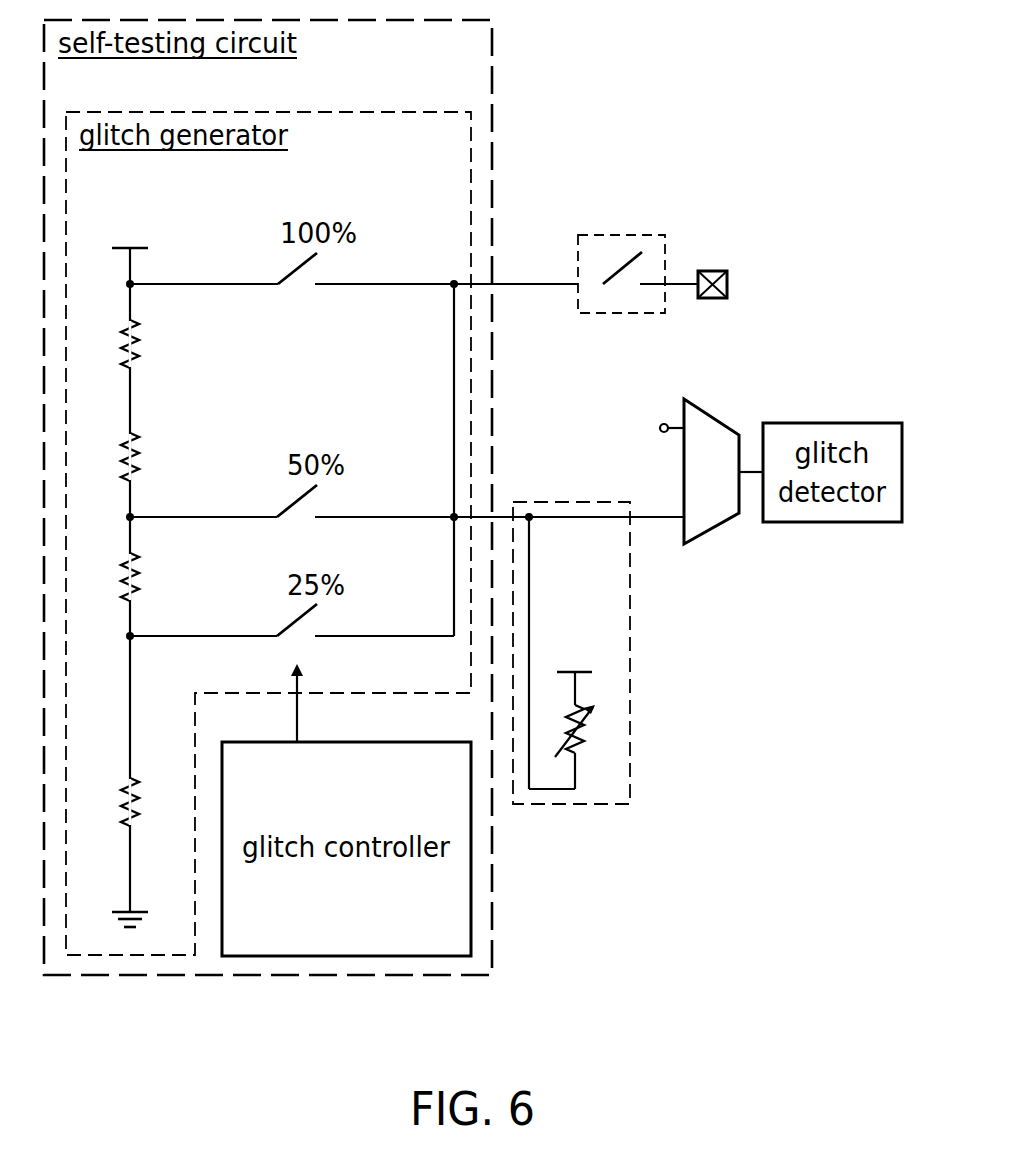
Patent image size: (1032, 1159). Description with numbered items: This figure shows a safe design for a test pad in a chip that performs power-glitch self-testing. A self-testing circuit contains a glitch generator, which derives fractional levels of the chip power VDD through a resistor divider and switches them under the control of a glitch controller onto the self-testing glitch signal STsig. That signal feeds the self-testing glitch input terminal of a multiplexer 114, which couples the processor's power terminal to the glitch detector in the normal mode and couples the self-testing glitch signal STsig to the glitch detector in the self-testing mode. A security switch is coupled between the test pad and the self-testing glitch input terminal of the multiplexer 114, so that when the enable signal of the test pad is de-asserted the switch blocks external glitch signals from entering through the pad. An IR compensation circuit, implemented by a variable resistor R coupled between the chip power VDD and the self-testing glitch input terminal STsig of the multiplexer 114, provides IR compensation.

The multiplexer 114 is at (714, 416).
The self-testing glitch signal STsig is at (529, 520).
The variable resistor R is at (585, 749).
The chip power VDD is at (130, 247).